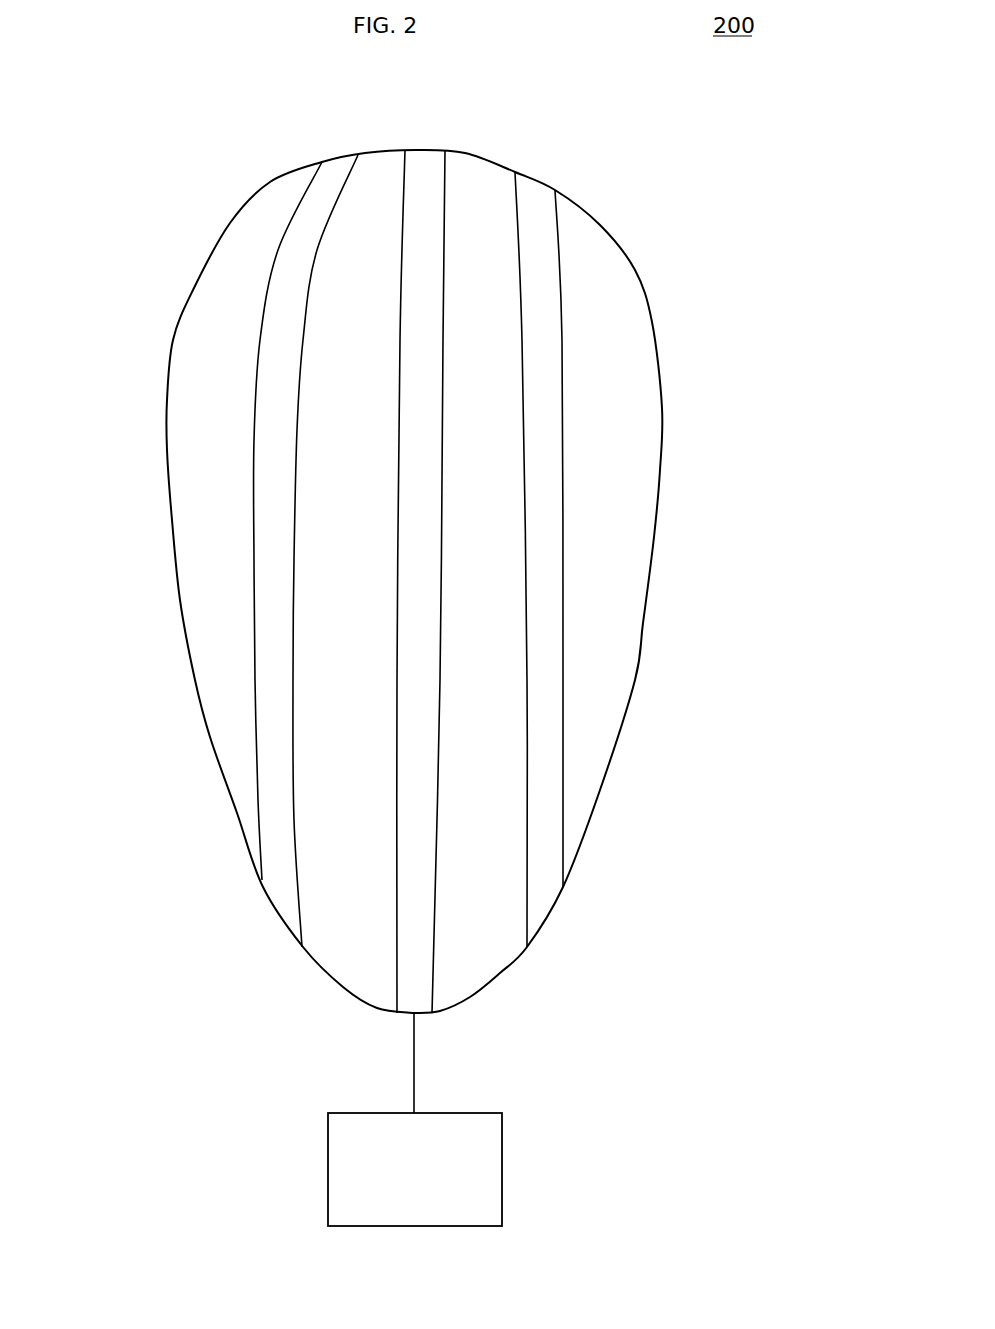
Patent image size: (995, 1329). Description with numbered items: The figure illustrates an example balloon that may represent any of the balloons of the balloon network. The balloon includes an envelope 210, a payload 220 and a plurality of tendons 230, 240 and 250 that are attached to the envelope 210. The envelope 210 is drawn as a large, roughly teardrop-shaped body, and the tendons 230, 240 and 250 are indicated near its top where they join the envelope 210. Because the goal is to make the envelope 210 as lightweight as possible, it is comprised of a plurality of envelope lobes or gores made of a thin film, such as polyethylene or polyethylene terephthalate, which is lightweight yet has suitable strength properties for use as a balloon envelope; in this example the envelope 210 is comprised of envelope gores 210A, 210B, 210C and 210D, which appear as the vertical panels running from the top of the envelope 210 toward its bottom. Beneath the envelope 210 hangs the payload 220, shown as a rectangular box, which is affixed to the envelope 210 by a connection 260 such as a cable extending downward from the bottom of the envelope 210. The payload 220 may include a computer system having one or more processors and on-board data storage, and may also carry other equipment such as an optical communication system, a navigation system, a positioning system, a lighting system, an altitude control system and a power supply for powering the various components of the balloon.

The envelope 210 is at (652, 322).
The envelope gore 210A is at (217, 622).
The envelope gore 210B is at (328, 780).
The envelope gore 210C is at (465, 867).
The envelope gore 210D is at (615, 597).
The payload 220 is at (327, 1163).
The tendon 230 is at (182, 505).
The tendon 240 is at (422, 145).
The tendon 250 is at (630, 507).
The connection 260 is at (415, 1076).